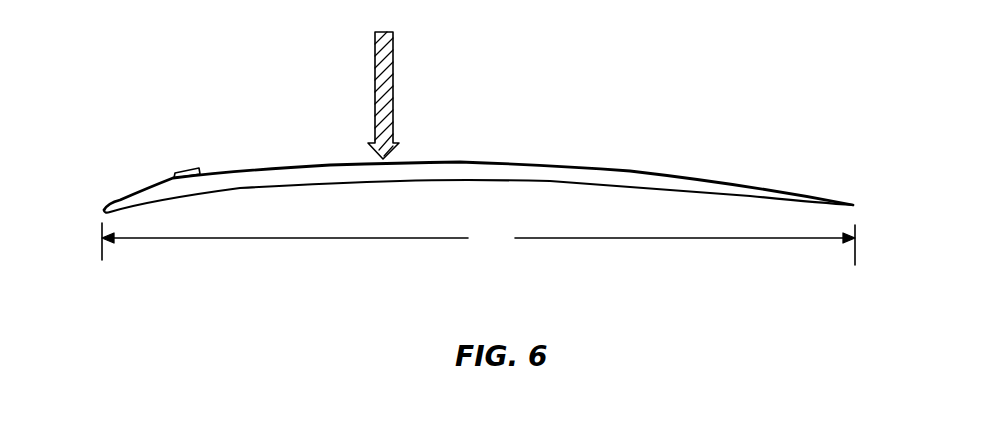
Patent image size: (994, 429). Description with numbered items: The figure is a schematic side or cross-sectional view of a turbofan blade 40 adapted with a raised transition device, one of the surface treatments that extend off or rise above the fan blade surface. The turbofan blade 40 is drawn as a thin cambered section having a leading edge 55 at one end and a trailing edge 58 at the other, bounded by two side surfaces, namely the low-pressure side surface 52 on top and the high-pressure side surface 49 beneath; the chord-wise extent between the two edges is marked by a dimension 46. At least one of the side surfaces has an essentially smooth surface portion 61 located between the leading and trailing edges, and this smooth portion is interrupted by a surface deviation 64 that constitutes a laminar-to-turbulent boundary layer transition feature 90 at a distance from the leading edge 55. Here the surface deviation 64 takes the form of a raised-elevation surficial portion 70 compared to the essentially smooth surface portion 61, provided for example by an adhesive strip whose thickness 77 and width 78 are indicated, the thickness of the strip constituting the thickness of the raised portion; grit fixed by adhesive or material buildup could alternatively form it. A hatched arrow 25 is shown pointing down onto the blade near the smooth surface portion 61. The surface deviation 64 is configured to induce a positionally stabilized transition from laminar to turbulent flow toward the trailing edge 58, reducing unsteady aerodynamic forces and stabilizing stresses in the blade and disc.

The turbofan blade 40 is at (478, 161).
The low-pressure side surface 52 is at (493, 162).
The high-pressure side surface 49 is at (567, 183).
The leading edge 55 is at (102, 208).
The trailing edge 58 is at (857, 208).
The surface deviation 64 is at (198, 158).
The width 78 is at (176, 172).
The thickness 77 is at (201, 171).
The raised-elevation surficial portion 70 is at (173, 177).
The laminar-to-turbulent boundary layer transition feature 90 is at (170, 133).
The applied load 25 is at (393, 57).
The essentially smooth surface portion 61 is at (342, 161).
The chord length 46 is at (478, 244).